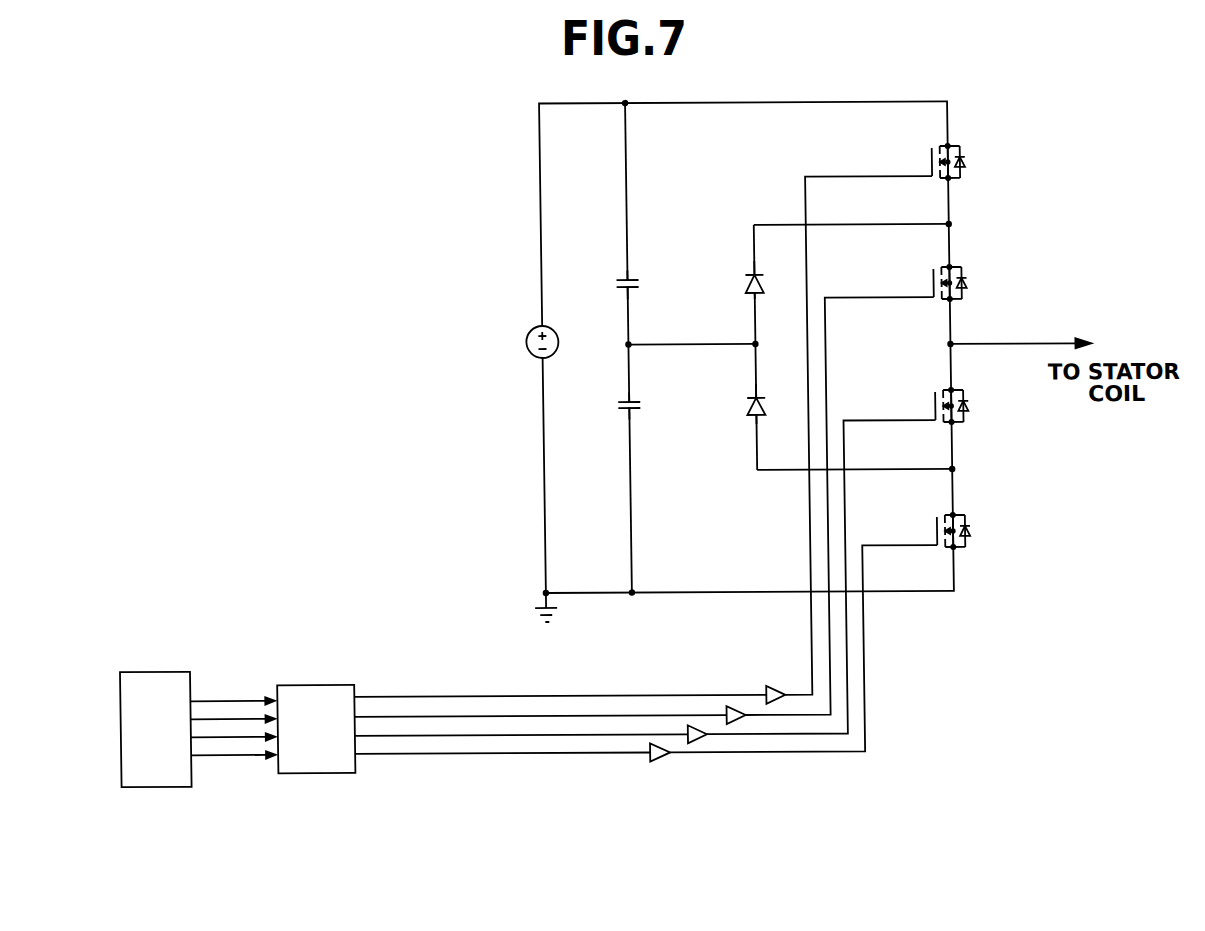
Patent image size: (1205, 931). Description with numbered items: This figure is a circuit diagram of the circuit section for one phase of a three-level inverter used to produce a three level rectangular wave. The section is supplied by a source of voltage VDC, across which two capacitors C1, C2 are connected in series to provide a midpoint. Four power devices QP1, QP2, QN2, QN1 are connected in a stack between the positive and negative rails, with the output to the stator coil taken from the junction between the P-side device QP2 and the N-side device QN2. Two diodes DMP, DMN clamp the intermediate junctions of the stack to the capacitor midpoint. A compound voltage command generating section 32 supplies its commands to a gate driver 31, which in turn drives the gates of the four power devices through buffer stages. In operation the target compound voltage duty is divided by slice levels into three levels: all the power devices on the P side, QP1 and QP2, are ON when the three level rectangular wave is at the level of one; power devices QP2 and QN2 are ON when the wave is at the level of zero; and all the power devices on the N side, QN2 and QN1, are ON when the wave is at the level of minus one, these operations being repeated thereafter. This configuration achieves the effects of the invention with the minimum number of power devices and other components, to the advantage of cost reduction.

The gate driver 31 is at (316, 772).
The compound voltage command generating section 32 is at (150, 786).
The power device QP1 is at (981, 162).
The power device QP2 is at (982, 283).
The power device QN2 is at (985, 406).
The power device QN1 is at (986, 531).
The capacitor C1 is at (607, 285).
The capacitor C2 is at (609, 406).
The diode DMP is at (719, 280).
The diode DMN is at (721, 404).
The source of voltage VDC is at (510, 342).